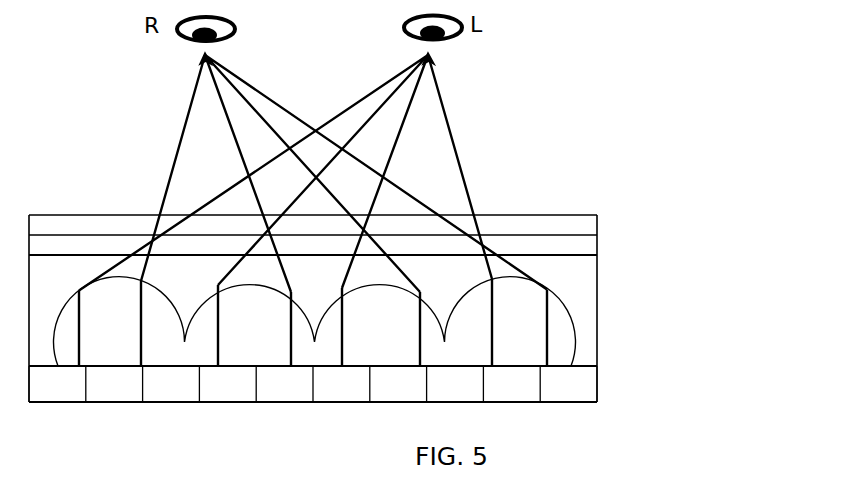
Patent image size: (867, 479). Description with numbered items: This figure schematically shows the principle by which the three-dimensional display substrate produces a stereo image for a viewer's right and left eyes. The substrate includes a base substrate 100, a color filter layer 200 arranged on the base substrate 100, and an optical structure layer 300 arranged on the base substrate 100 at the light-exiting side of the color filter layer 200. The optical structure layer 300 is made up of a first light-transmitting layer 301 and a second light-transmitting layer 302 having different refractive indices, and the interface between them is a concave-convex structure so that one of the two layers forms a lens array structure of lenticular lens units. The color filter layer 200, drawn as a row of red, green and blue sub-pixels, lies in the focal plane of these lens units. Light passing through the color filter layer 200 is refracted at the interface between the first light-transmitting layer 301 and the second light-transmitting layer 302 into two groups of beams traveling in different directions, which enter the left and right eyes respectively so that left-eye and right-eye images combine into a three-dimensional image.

The base substrate 100 is at (578, 251).
The color filter layer 200 is at (587, 383).
The optical structure layer 300 is at (424, 310).
The first light-transmitting layer 301 is at (535, 327).
The second light-transmitting layer 302 is at (580, 292).